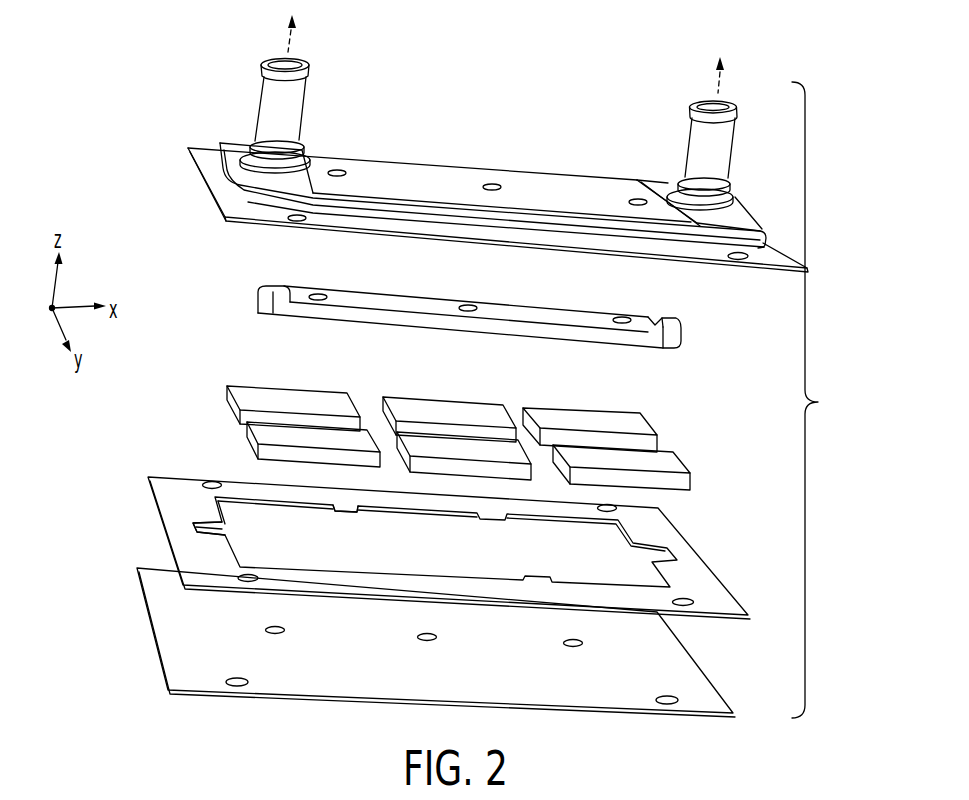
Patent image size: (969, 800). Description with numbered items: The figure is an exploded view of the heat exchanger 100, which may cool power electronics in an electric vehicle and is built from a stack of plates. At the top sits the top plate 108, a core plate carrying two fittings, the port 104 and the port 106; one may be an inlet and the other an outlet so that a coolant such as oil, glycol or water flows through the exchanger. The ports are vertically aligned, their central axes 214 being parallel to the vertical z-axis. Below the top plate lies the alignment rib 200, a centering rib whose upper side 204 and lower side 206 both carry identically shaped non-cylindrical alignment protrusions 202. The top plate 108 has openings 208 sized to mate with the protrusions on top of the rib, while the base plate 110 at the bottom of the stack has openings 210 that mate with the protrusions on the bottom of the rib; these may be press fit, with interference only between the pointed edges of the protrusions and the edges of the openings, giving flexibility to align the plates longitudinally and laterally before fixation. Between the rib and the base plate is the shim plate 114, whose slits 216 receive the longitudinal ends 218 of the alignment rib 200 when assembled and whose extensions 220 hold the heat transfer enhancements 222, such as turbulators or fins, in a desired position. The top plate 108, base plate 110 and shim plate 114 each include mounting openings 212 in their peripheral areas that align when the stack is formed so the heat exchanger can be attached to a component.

The heat exchanger 100 is at (818, 402).
The port 104 is at (239, 86).
The port 106 is at (669, 110).
The top plate 108 is at (164, 92).
The base plate 110 is at (392, 615).
The shim plate 114 is at (400, 515).
The alignment rib 200 is at (461, 298).
The non-cylindrical alignment protrusions 202 is at (320, 295).
The upper side 204 is at (468, 319).
The lower side 206 is at (390, 340).
The openings 208 is at (340, 163).
The openings 210 is at (277, 615).
The mounting openings 212 is at (282, 212).
The central axes 214 is at (288, 53).
The slits 216 is at (205, 518).
The longitudinal ends 218 is at (241, 303).
The extensions 220 is at (350, 512).
The heat transfer enhancements 222 is at (263, 397).